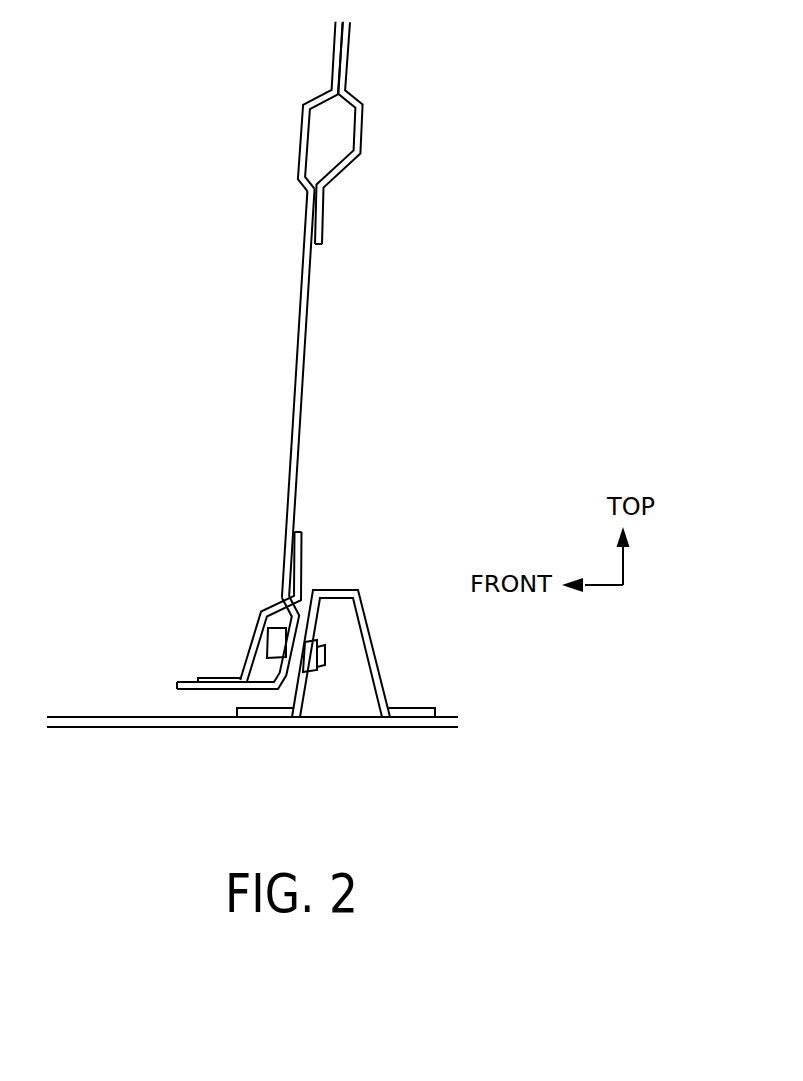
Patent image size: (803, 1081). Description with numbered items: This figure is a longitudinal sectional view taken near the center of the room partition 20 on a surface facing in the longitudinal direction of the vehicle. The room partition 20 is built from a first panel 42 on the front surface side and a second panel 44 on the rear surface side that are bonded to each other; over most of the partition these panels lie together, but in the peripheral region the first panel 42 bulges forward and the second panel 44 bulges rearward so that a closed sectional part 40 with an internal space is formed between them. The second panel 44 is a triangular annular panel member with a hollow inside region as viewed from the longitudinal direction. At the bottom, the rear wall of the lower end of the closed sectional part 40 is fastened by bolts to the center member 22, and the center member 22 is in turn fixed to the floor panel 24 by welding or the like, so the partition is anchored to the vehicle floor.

The room partition 20 is at (226, 338).
The center member 22 is at (365, 617).
The floor panel 24 is at (102, 717).
The closed sectional part 40 is at (328, 143).
The first panel 42 is at (300, 284).
The second panel 44 is at (333, 178).